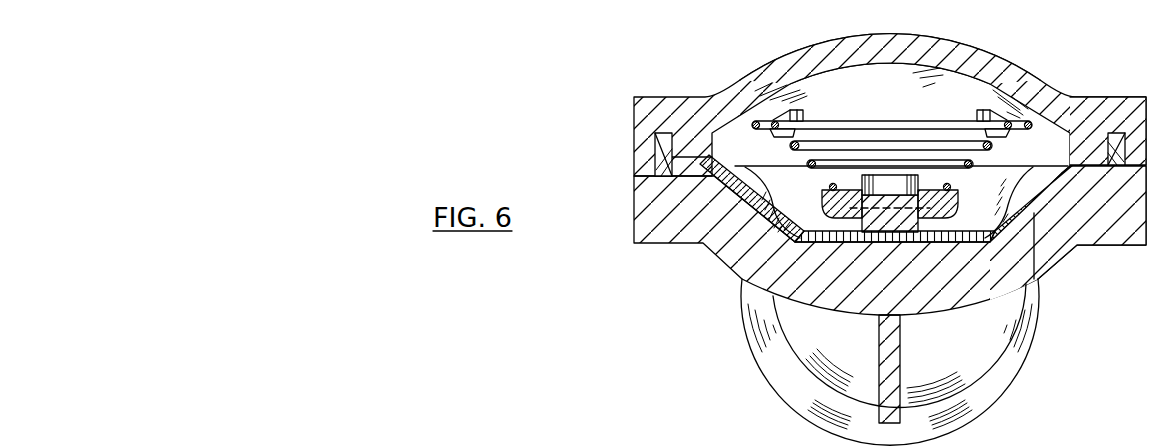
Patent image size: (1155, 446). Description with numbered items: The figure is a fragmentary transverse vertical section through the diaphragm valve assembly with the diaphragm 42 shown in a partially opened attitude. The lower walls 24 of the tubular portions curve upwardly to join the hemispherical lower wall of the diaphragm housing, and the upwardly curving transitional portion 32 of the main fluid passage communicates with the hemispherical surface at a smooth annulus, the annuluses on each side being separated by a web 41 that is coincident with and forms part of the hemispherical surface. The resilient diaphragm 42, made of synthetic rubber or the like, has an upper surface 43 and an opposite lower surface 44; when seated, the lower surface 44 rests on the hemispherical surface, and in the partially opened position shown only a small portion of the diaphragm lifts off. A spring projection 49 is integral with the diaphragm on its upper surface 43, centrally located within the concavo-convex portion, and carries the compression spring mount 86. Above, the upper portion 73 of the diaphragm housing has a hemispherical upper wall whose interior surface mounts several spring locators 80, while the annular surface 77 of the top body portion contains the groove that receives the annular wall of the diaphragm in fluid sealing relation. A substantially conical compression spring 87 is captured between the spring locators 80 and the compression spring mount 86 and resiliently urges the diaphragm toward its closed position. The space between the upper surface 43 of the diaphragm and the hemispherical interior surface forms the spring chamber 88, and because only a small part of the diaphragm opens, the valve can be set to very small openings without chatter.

The lower walls 24 is at (838, 313).
The transitional portion 32 is at (833, 254).
The web 41 is at (927, 250).
The diaphragm 42 is at (777, 217).
The upper surface 43 is at (996, 207).
The lower surface 44 is at (1034, 235).
The spring projection 49 is at (947, 174).
The upper portion 73 is at (953, 42).
The annular surface 77 is at (733, 163).
The spring locators 80 is at (800, 110).
The compression spring mount 86 is at (842, 188).
The compression spring 87 is at (883, 146).
The spring chamber 88 is at (875, 97).